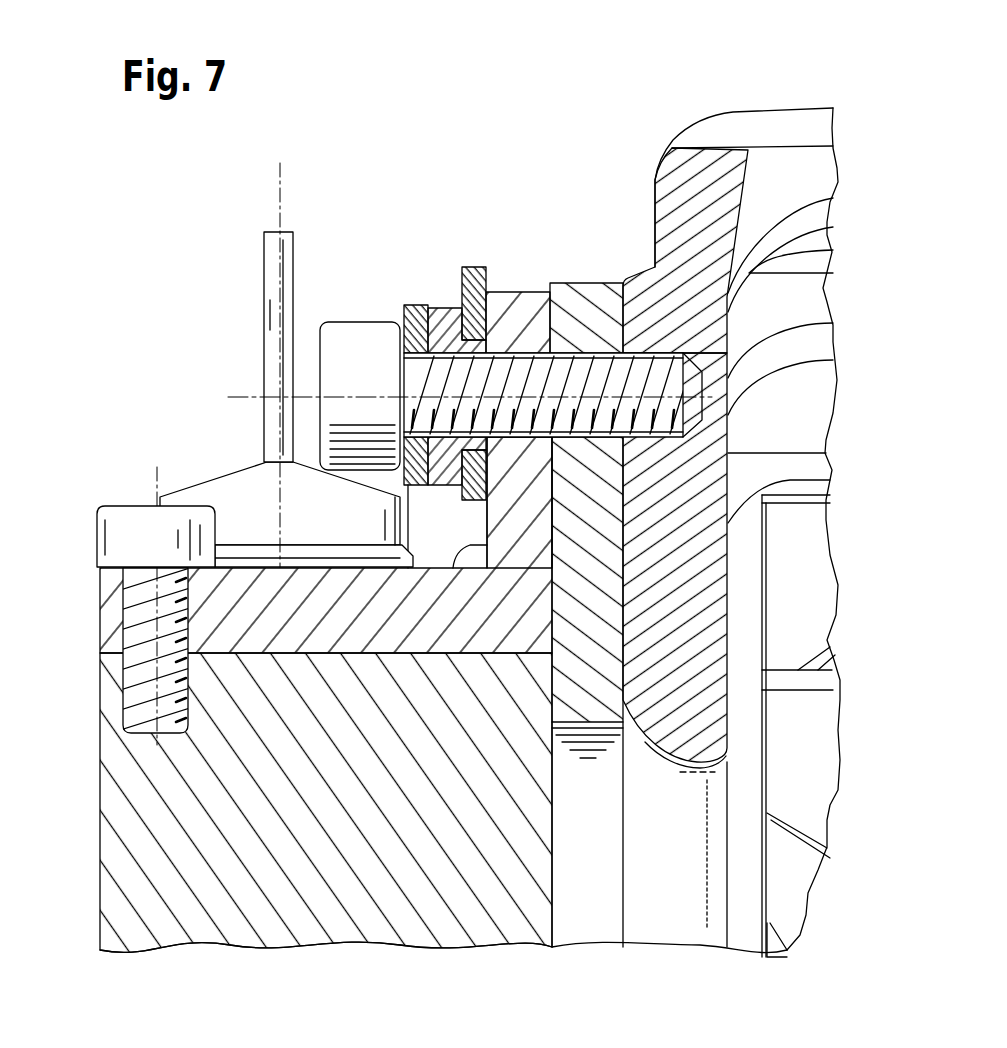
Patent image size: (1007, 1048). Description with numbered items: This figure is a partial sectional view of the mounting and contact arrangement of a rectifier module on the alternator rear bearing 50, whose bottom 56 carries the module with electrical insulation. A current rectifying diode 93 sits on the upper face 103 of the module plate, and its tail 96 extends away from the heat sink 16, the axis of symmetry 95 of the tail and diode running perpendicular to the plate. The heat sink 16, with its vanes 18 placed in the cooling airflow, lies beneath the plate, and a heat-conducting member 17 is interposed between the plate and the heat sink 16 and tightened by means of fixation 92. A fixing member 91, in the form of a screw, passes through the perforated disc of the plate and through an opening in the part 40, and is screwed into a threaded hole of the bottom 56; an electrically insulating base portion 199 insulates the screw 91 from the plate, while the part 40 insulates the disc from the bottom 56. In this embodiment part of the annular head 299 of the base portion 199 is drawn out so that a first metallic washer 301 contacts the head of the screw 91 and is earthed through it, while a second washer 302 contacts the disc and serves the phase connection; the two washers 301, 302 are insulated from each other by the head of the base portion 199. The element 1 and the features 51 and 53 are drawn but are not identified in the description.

The mounting plate 1 is at (100, 600).
The heat sink 16 is at (84, 813).
The heat-conducting member 17 is at (100, 653).
The vanes 18 is at (333, 910).
The part 40 is at (600, 722).
The rear bearing 50 is at (720, 507).
The channel 51 is at (670, 887).
The housing flange 53 is at (782, 130).
The bottom 56 is at (605, 313).
The fixing member 91 is at (372, 345).
The means of fixation 92 is at (121, 520).
The current rectifying member 93 is at (233, 470).
The axis of symmetry 95 is at (280, 183).
The tail 96 is at (273, 278).
The upper face 103 is at (488, 545).
The electrically insulating base portion 199 is at (447, 491).
The annular head 299 is at (452, 307).
The first metallic washer 301 is at (417, 307).
The second washer 302 is at (478, 267).